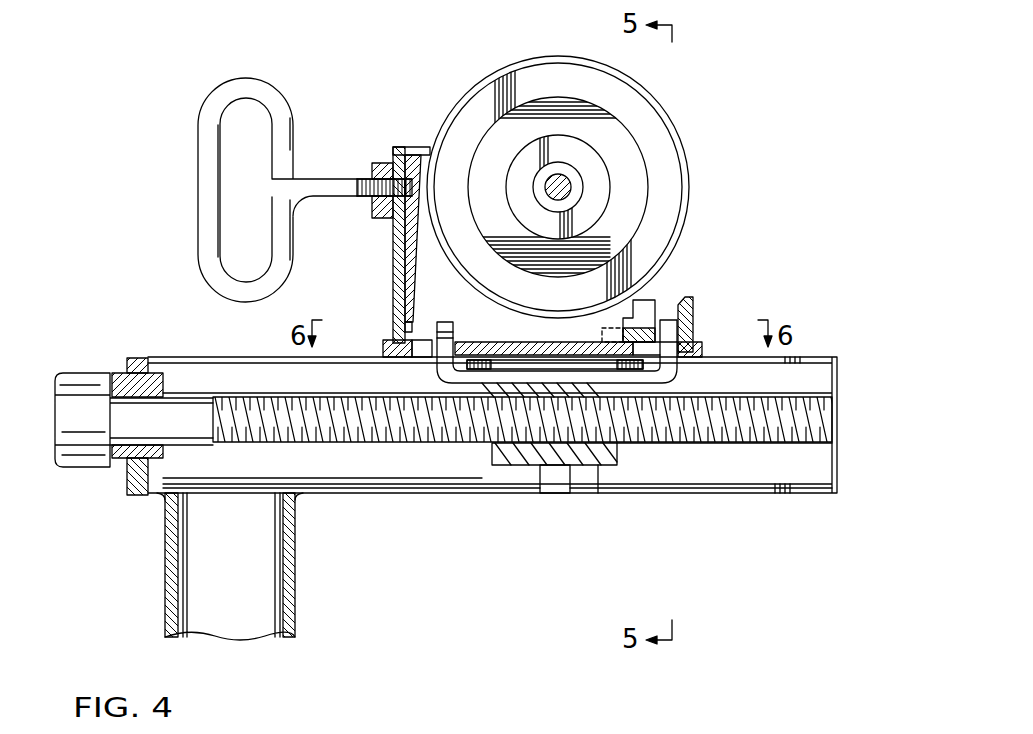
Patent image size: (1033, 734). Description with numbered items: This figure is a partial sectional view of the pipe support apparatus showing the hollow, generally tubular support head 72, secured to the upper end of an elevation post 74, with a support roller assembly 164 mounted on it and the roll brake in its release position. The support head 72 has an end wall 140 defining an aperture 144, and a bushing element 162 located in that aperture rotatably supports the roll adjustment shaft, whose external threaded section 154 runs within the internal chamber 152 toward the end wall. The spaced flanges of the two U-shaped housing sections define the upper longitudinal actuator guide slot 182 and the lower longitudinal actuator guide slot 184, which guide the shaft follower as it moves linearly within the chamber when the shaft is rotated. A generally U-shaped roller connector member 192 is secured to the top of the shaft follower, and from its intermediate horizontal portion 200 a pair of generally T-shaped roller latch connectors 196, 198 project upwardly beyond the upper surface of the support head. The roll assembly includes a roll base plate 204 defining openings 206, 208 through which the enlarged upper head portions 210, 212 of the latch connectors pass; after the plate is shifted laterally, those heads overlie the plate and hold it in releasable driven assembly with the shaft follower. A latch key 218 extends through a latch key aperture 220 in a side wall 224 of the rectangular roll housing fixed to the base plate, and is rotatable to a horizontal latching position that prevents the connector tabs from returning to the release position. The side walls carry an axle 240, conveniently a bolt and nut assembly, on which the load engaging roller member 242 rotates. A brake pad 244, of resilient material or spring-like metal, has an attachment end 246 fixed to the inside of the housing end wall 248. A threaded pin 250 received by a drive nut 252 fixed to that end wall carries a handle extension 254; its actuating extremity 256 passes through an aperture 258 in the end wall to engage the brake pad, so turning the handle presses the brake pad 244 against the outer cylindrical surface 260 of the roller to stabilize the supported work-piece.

The support head 72 is at (364, 495).
The elevation post 74 is at (168, 573).
The end wall 140 is at (128, 358).
The aperture 144 is at (128, 477).
The internal chamber 152 is at (655, 473).
The external threaded section 154 is at (757, 428).
The bushing element 162 is at (155, 385).
The support roller assembly 164 is at (472, 52).
The upper longitudinal actuator guide slot 182 is at (810, 362).
The lower longitudinal actuator guide slot 184 is at (522, 493).
The roller connector member 192 is at (473, 385).
The roller latch connector 196 is at (390, 340).
The roller latch connector 198 is at (695, 346).
The intermediate horizontal portion 200 is at (528, 382).
The roll base plate 204 is at (593, 397).
The opening 206 is at (423, 355).
The opening 208 is at (674, 358).
The enlarged upper head portion 210 is at (447, 320).
The enlarged upper head portion 212 is at (697, 333).
The latch key 218 is at (613, 290).
The latch key aperture 220 is at (665, 322).
The side wall 224 is at (637, 297).
The axle 240 is at (573, 190).
The roller member 242 is at (637, 107).
The brake pad 244 is at (412, 230).
The attachment end 246 is at (403, 303).
The end wall 248 is at (395, 267).
The threaded pin 250 is at (365, 180).
The drive nut 252 is at (375, 162).
The handle extension 254 is at (198, 177).
The actuating extremity 256 is at (412, 190).
The aperture 258 is at (436, 163).
The outer cylindrical surface 260 is at (673, 127).